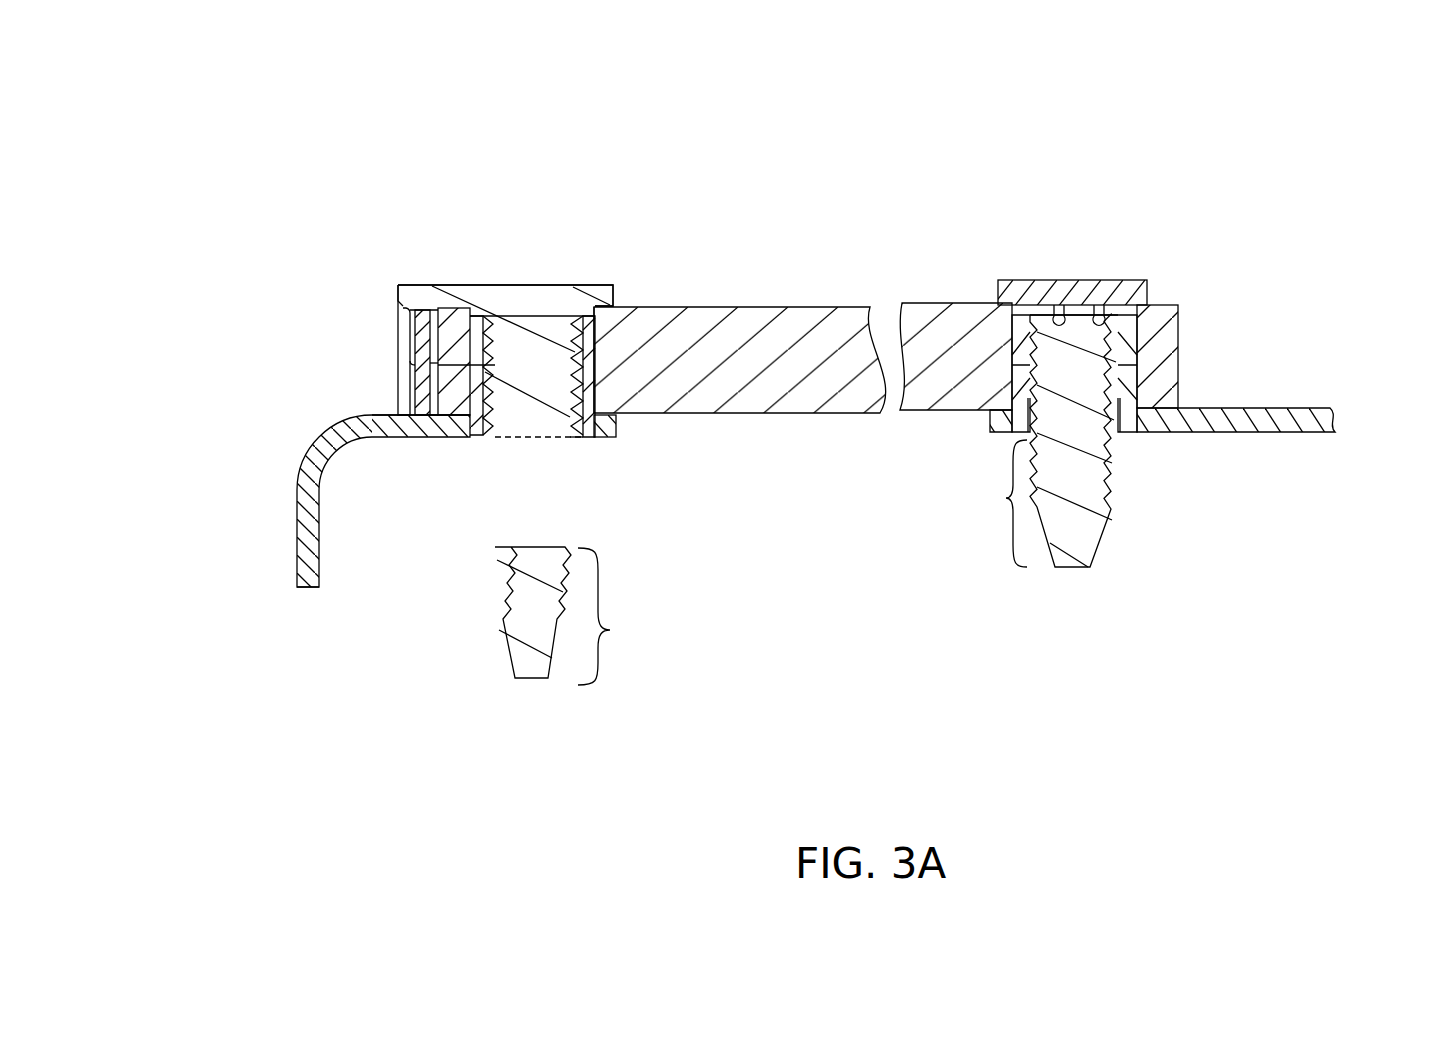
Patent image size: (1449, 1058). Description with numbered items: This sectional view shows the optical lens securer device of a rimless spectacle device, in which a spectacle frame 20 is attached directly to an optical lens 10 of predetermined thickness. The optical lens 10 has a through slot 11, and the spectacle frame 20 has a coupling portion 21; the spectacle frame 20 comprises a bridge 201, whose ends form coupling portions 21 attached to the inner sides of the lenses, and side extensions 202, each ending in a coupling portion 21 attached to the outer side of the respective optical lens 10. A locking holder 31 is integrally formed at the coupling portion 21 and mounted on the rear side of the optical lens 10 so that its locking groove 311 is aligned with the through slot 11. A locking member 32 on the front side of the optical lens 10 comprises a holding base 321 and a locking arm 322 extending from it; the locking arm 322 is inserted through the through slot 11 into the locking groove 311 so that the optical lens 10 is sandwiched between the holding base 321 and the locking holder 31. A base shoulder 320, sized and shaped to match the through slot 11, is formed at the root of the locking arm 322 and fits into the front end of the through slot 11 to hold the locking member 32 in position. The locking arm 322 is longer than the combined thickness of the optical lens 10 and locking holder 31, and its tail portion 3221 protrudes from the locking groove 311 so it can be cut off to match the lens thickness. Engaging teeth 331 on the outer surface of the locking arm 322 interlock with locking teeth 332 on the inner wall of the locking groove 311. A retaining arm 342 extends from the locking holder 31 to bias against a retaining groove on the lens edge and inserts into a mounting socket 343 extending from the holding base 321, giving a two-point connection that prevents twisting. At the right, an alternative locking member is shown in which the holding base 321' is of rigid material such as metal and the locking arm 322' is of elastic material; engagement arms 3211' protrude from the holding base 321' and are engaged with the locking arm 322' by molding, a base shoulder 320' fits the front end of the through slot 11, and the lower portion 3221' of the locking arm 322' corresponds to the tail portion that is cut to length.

The optical lens 10 is at (797, 400).
The through slot 11 is at (597, 328).
The spectacle frame 20 is at (197, 563).
The coupling portion 21 is at (322, 413).
The bridge 201 is at (1308, 422).
The side extension 202 is at (300, 558).
The locking holder 31 is at (608, 427).
The locking groove 311 is at (578, 437).
The locking member 32 is at (570, 158).
The base shoulder 320 is at (623, 236).
The holding base 321 is at (505, 228).
The locking arm 322 is at (544, 317).
The engaging teeth 331 is at (487, 418).
The locking teeth 332 is at (457, 415).
The retaining arm 342 is at (410, 376).
The mounting socket 343 is at (410, 326).
The tail portion 3221 is at (594, 616).
The holding base 321' is at (1072, 204).
The engagement arm 3211' is at (1016, 266).
The locking arm 322' is at (1148, 293).
The base shoulder 320' is at (1177, 268).
The screw thread segment 3221' is at (977, 503).